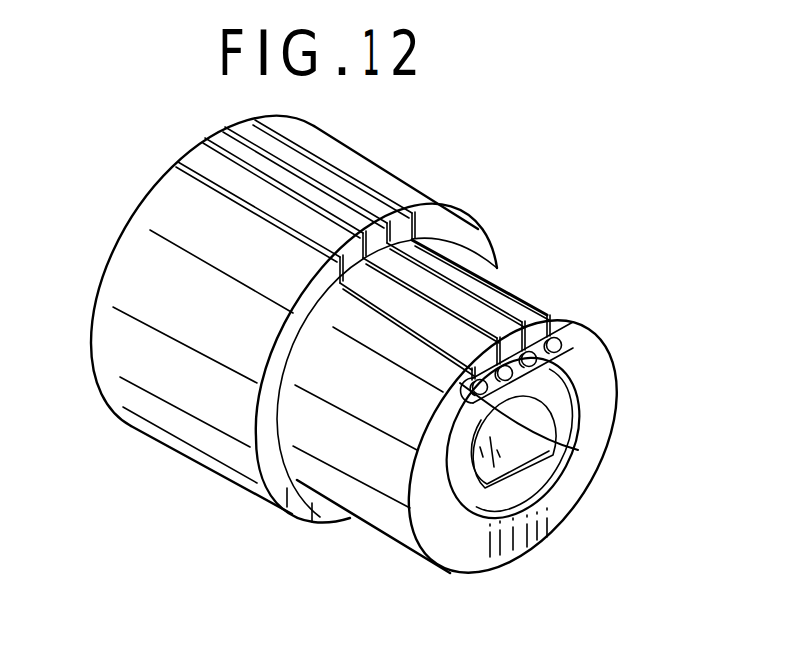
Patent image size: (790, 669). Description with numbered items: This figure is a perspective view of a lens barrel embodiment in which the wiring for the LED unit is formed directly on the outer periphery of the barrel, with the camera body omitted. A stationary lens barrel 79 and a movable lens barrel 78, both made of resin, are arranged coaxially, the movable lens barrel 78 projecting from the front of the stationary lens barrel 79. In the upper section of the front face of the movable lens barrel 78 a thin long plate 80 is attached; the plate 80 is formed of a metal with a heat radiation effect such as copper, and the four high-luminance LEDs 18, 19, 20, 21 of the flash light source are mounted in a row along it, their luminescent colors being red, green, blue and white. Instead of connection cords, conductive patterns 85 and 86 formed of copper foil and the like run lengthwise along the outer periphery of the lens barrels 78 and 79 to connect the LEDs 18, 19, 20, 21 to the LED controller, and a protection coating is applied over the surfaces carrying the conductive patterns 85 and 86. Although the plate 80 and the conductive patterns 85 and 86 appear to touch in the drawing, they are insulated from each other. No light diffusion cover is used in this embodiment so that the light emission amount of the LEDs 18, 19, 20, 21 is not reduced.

The LED 18 is at (556, 442).
The LED 19 is at (540, 393).
The LED 20 is at (570, 380).
The LED 21 is at (560, 352).
The movable lens barrel 78 is at (393, 545).
The stationary lens barrel 79 is at (167, 445).
The thin long plate 80 is at (575, 316).
The conductive pattern 85 is at (517, 296).
The conductive pattern 86 is at (344, 172).